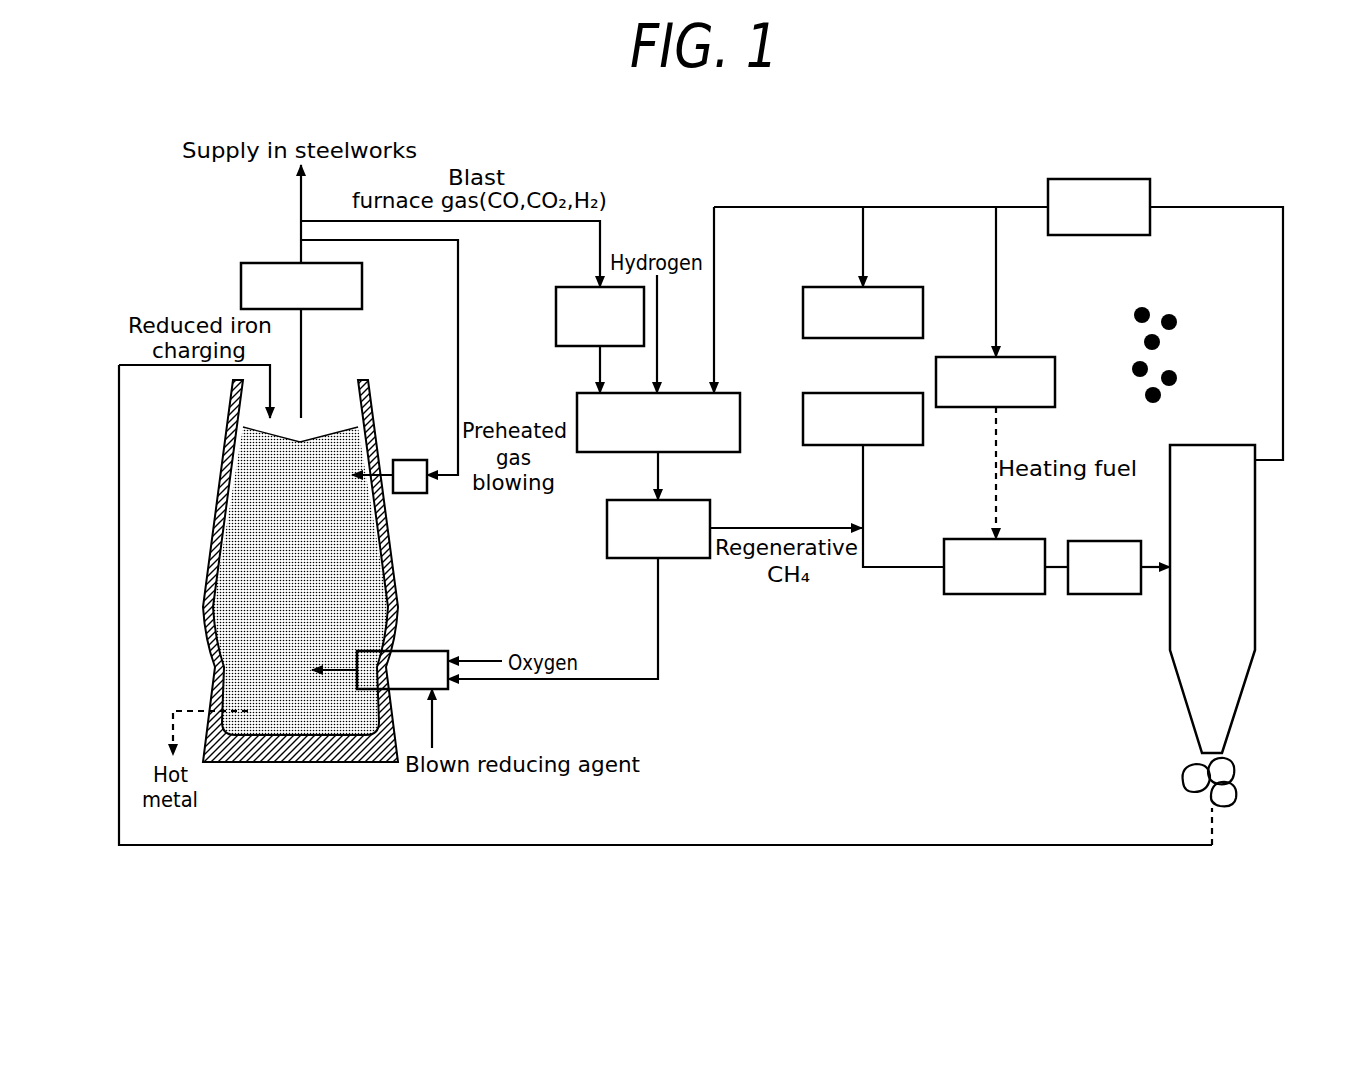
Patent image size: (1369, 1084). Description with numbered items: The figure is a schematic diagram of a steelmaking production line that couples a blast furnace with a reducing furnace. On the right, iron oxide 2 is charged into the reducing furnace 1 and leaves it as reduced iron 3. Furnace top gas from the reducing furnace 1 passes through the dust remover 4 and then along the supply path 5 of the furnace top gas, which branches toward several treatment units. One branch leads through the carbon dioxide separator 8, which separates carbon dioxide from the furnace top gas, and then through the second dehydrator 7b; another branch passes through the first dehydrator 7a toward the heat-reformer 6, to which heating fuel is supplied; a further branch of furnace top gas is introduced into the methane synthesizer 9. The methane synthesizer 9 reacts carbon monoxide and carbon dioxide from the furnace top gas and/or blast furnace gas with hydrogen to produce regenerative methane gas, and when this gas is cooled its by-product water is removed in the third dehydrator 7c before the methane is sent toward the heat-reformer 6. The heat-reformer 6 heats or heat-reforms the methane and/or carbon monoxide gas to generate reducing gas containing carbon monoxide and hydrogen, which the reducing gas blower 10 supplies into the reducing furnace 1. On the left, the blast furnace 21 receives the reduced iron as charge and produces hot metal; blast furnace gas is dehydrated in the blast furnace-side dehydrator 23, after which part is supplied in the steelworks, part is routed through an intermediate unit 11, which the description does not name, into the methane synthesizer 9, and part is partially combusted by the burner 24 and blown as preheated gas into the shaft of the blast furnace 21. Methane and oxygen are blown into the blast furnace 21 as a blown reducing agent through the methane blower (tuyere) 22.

The reducing furnace 1 is at (1203, 581).
The iron oxide 2 is at (1120, 320).
The reduced iron 3 is at (1180, 771).
The dust remover 4 is at (1090, 221).
The supply path of furnace top gas 5 is at (878, 207).
The heat-reformer 6 is at (985, 581).
The first dehydrator 7a is at (983, 396).
The second dehydrator 7b is at (850, 433).
The third dehydrator 7c is at (645, 542).
The carbon dioxide separator 8 is at (854, 326).
The methane synthesizer 9 is at (649, 434).
The reducing gas blower 10 is at (1091, 581).
The gas compressor 11 is at (588, 330).
The blast furnace 21 is at (222, 508).
The methane blower (tuyere) 22 is at (389, 684).
The blast furnace-side dehydrator 23 is at (288, 299).
The burner 24 is at (408, 460).